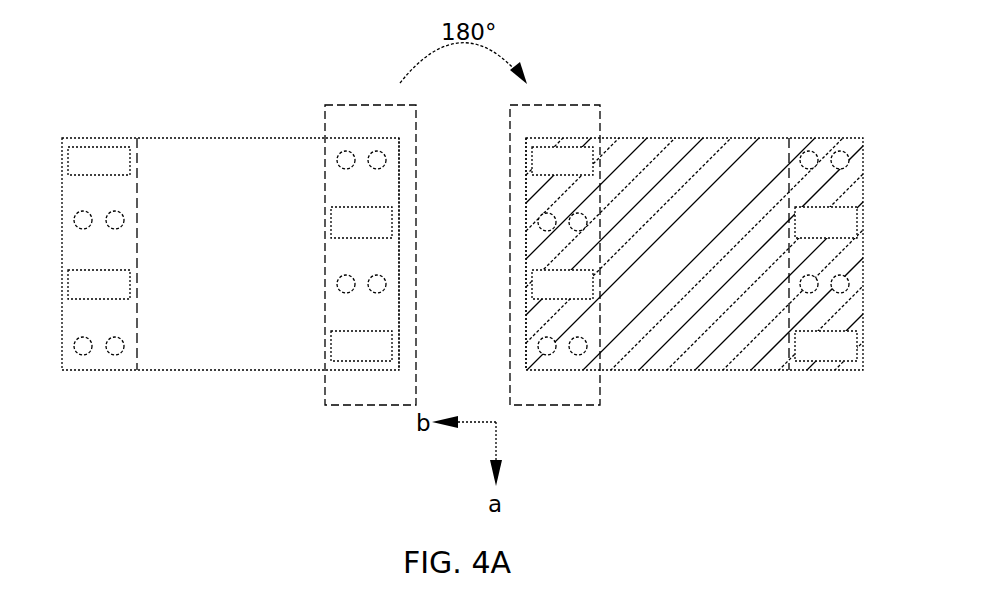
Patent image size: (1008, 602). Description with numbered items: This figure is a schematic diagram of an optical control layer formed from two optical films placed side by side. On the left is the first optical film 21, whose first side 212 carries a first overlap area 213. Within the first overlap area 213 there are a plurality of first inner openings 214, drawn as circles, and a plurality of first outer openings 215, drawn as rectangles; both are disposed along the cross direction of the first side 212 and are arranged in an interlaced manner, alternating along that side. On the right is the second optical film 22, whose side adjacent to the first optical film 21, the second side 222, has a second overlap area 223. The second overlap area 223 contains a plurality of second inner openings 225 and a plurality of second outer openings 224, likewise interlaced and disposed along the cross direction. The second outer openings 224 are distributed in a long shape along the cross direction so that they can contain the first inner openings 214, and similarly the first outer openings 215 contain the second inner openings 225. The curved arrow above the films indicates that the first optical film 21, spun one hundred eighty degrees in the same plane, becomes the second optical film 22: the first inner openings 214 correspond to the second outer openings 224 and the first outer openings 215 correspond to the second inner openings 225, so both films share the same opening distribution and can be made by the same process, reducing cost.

The first optical film 21 is at (182, 137).
The second optical film 22 is at (748, 137).
The first side 212 is at (403, 267).
The second side 222 is at (523, 267).
The first overlap area 213 is at (356, 105).
The second overlap area 223 is at (574, 105).
The first inner openings 214 is at (336, 160).
The first outer openings 215 is at (328, 222).
The second outer openings 224 is at (593, 163).
The second inner openings 225 is at (587, 222).